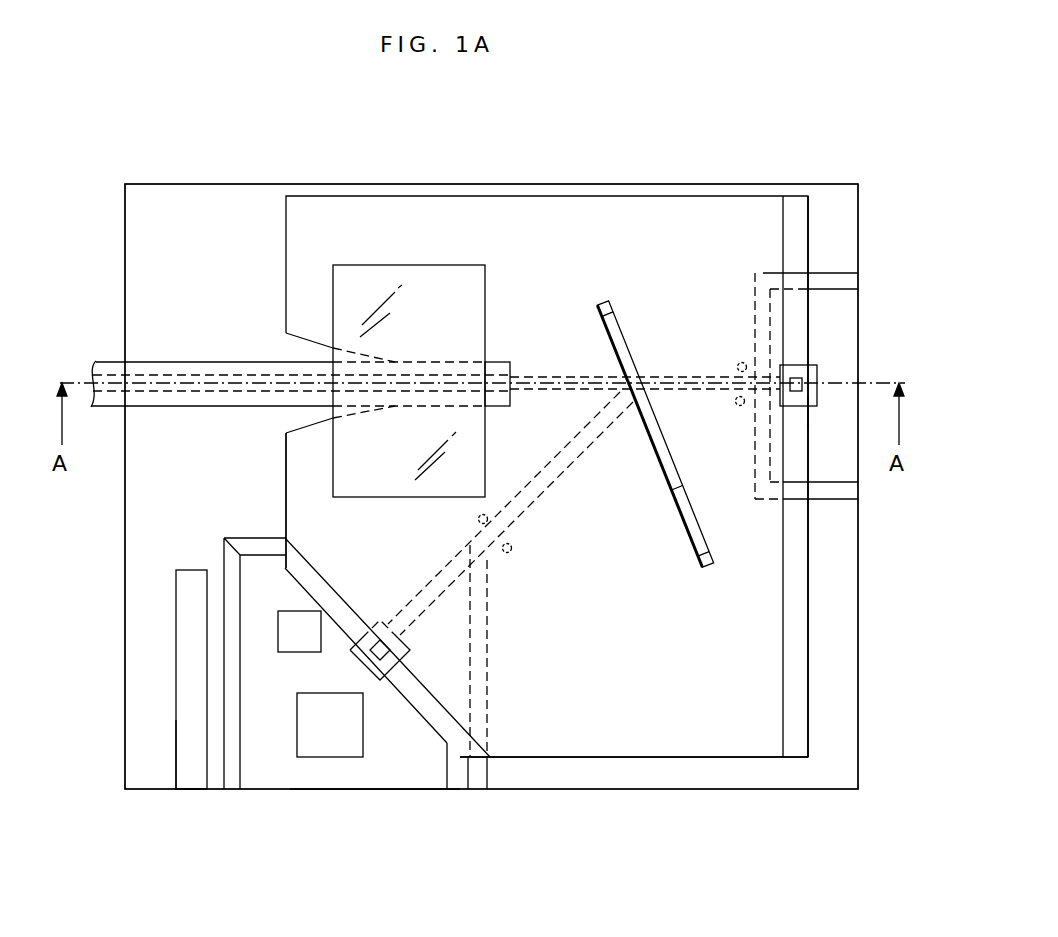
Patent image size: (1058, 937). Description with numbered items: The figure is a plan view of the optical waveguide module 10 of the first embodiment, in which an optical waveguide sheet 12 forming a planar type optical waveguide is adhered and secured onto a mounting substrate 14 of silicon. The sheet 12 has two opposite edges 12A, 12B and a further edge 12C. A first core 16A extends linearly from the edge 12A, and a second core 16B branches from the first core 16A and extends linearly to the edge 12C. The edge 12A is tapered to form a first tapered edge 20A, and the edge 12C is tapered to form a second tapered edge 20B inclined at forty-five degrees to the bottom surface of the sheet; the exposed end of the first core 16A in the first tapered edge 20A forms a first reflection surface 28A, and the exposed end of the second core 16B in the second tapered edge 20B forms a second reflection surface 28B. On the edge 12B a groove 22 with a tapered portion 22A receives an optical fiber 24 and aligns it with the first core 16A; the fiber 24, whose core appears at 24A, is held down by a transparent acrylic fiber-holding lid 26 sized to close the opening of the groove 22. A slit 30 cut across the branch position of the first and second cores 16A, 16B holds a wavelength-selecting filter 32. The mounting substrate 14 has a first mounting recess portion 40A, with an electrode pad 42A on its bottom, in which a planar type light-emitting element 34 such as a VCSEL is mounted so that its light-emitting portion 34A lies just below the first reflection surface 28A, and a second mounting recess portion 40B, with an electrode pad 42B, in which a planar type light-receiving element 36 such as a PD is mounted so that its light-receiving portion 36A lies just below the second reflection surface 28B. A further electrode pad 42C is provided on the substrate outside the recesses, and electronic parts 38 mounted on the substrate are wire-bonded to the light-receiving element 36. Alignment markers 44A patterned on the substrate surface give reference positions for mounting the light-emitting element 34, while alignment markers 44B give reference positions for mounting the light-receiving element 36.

The optical waveguide module 10 is at (258, 131).
The optical waveguide sheet 12 is at (355, 212).
The edge 12A is at (808, 663).
The edge 12B is at (285, 483).
The edge 12C is at (444, 745).
The mounting substrate 14 is at (152, 293).
The first core 16A is at (552, 377).
The second core 16B is at (538, 488).
The first tapered edge 20A is at (795, 737).
The second tapered edge 20B is at (280, 583).
The groove 22 is at (340, 348).
The tapered portion 22A is at (318, 342).
The optical fiber 24 is at (153, 405).
The fiber core 24A is at (138, 377).
The fiber-holding lid 26 is at (428, 278).
The first reflection surface 28A is at (808, 410).
The second reflection surface 28B is at (278, 634).
The slit 30 is at (698, 570).
The filter 32 is at (671, 490).
The planar type light-emitting element 34 is at (797, 372).
The light-emitting portion 34A is at (798, 375).
The planar type light-receiving element 36 is at (380, 684).
The light-receiving portion 36A is at (387, 662).
The electronic parts 38 is at (312, 742).
The first mounting recess portion 40A is at (835, 290).
The second mounting recess portion 40B is at (255, 688).
The electrode pad 42A is at (845, 432).
The electrode pad 42B is at (319, 777).
The electrode pad 42C is at (187, 733).
The alignment markers 44A is at (738, 397).
The alignment markers 44B is at (507, 553).